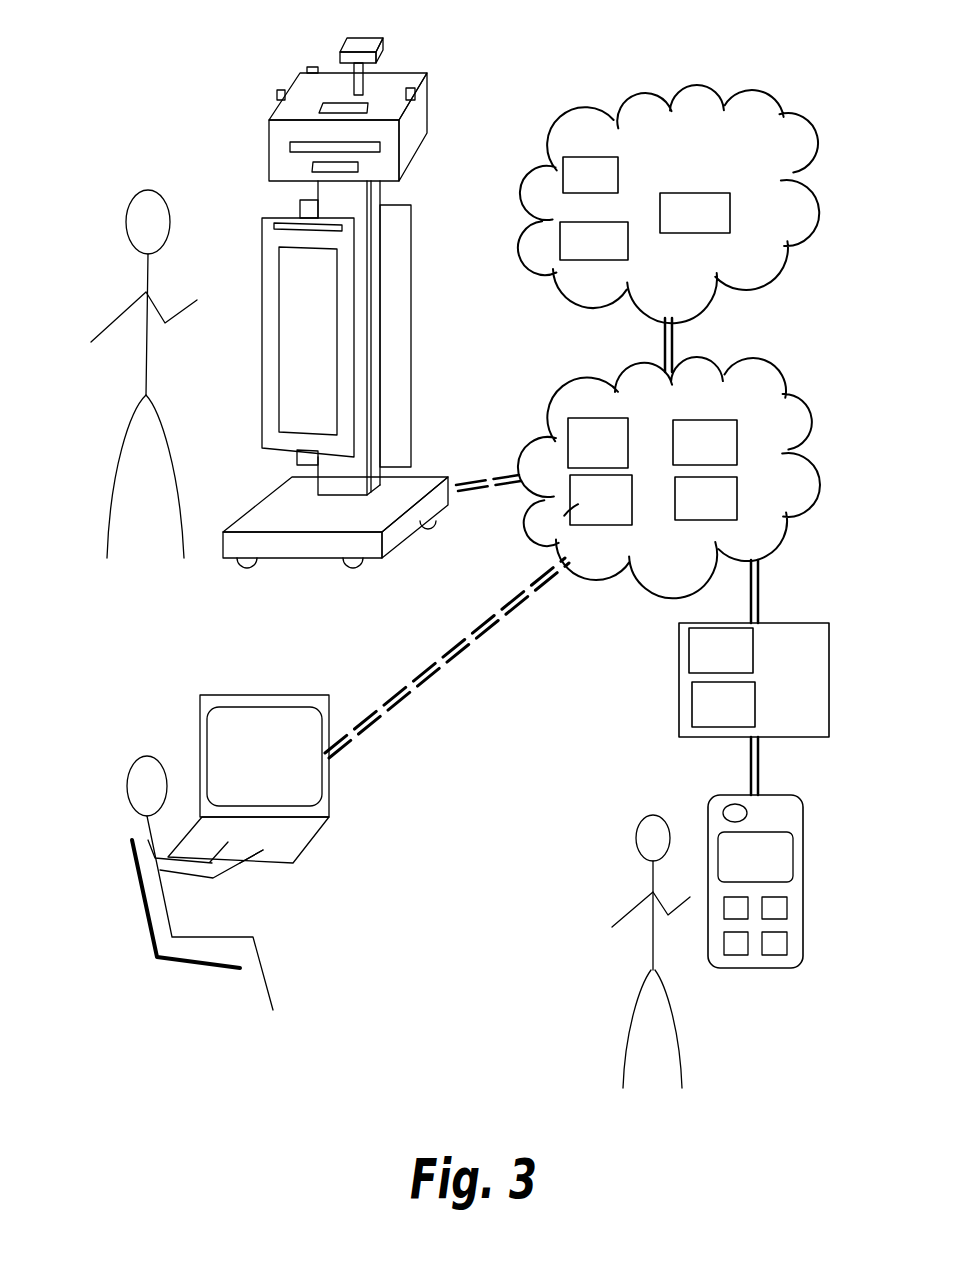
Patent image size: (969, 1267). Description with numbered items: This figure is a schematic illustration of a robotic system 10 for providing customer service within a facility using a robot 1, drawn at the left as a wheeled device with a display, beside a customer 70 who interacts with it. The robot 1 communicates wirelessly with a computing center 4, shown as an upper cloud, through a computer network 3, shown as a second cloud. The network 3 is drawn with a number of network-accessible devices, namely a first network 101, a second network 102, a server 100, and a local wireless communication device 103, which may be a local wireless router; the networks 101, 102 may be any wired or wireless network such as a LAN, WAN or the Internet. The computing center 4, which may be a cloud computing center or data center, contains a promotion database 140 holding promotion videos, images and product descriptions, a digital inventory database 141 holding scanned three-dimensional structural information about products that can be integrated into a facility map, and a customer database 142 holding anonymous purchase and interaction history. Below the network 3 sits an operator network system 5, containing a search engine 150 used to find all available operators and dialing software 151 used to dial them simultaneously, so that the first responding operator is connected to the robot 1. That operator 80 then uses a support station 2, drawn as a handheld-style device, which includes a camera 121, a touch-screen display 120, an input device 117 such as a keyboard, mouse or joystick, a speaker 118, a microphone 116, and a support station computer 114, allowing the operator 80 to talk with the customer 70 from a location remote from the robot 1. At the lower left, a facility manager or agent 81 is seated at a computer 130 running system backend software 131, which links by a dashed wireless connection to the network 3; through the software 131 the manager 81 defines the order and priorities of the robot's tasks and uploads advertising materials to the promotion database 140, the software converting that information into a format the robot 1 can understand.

The robotic system 10 is at (148, 104).
The robot 1 is at (315, 332).
The customer 70 is at (145, 388).
The computing center 4 is at (668, 204).
The digital inventory database 141 is at (608, 189).
The promotion database 140 is at (612, 255).
The customer database 142 is at (713, 227).
The computer network 3 is at (669, 477).
The first network 101 is at (616, 457).
The second network 102 is at (723, 456).
The server 100 is at (619, 514).
The local wireless communication device 103 is at (724, 512).
The operator network system 5 is at (754, 680).
The search engine 150 is at (739, 664).
The dialing software 151 is at (741, 719).
The support station 2 is at (779, 887).
The camera 121 is at (723, 816).
The touch-screen display 120 is at (757, 857).
The input device 117 is at (780, 908).
The speaker 118 is at (780, 946).
The microphone 116 is at (740, 908).
The support station computer 114 is at (737, 943).
The operator 80 is at (643, 955).
The facility manager or agent 81 is at (143, 828).
The laptop computer 130 is at (299, 785).
The system backend software 131 is at (281, 766).